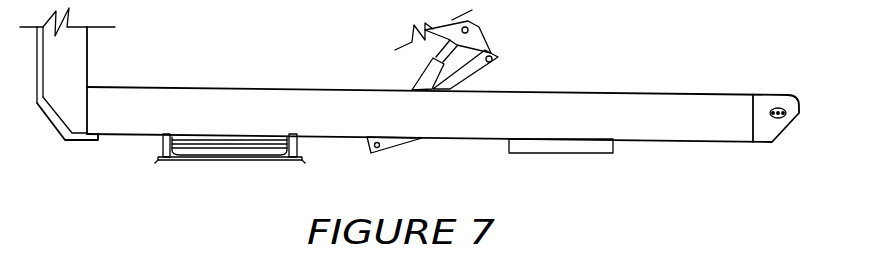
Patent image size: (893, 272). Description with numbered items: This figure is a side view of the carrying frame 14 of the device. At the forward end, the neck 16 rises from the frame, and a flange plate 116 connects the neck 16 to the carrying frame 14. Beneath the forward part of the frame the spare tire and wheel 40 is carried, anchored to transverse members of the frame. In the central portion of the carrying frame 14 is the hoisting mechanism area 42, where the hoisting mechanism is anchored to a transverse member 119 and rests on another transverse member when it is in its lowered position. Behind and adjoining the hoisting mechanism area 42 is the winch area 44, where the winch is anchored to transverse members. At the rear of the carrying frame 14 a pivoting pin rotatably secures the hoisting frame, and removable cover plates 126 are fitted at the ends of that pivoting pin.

The carrying frame 14 is at (521, 111).
The neck 16 is at (67, 55).
The flange plate 116 is at (62, 133).
The spare tire and wheel 40 is at (248, 149).
The hoisting mechanism area 42 is at (418, 65).
The transverse member 119 is at (384, 155).
The winch area 44 is at (596, 154).
The removable cover plates 126 is at (772, 107).